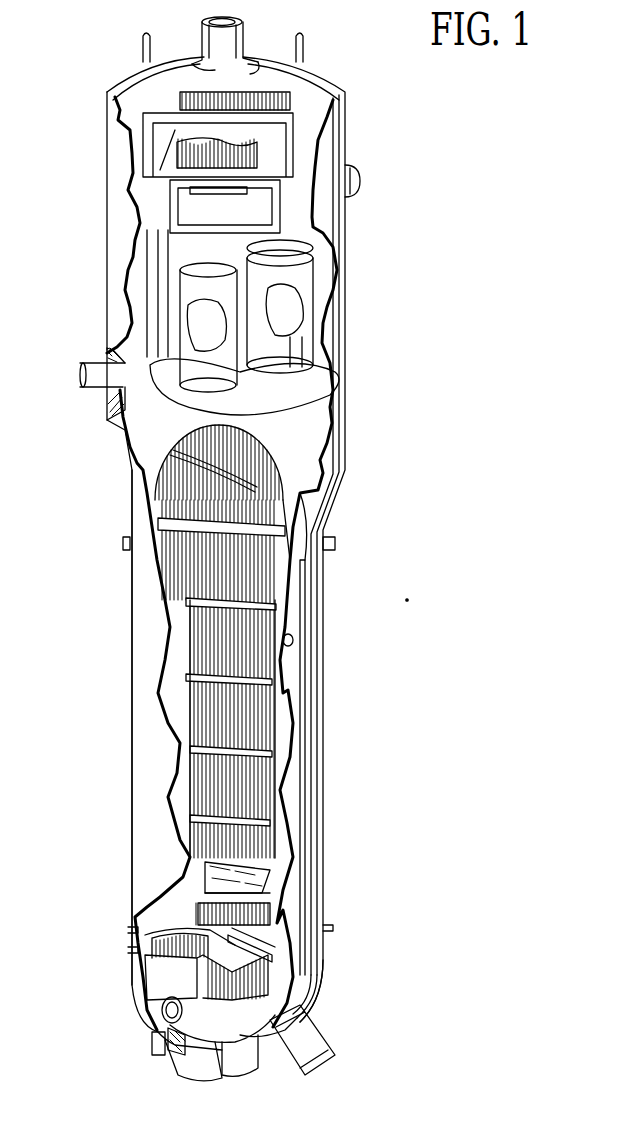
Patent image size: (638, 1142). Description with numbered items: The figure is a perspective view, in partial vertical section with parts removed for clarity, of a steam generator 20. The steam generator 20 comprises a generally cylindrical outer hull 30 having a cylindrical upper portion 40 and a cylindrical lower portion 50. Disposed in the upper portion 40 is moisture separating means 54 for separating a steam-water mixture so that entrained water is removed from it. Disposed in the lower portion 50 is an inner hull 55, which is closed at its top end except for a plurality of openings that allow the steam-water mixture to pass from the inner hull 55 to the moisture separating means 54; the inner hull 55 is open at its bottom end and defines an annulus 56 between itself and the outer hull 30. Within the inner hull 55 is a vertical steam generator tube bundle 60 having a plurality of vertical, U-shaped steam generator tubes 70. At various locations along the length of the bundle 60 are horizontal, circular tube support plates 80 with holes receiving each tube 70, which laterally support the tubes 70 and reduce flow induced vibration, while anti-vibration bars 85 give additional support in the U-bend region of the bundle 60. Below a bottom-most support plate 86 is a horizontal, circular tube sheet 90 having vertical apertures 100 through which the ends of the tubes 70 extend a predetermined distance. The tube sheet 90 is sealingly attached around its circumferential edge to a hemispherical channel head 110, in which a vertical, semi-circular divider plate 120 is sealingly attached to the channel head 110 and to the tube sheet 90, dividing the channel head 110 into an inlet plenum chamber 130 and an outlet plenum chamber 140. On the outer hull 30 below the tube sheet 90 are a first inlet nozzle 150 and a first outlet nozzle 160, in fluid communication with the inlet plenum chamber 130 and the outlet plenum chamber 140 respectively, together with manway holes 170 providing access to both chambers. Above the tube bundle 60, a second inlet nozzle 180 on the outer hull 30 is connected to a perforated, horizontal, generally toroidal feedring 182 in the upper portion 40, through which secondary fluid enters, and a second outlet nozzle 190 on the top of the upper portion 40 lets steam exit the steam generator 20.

The steam generator 20 is at (372, 356).
The outer hull 30 is at (346, 221).
The upper portion 40 is at (110, 176).
The lower portion 50 is at (140, 778).
The moisture separating means 54 is at (175, 128).
The inner hull 55 is at (281, 598).
The annulus 56 is at (296, 640).
The vertical steam generator tube bundle 60 is at (245, 793).
The steam generator tubes 70 is at (250, 693).
The tube support plates 80 is at (231, 679).
The anti-vibration bars 85 is at (282, 503).
The bottom-most support plate 86 is at (265, 890).
The tube sheet 90 is at (155, 968).
The apertures 100 is at (292, 966).
The channel head 110 is at (320, 990).
The divider plate 120 is at (232, 1022).
The inlet plenum chamber 130 is at (282, 1002).
The outlet plenum chamber 140 is at (155, 995).
The first inlet nozzle 150 is at (310, 1062).
The first outlet nozzle 160 is at (190, 1066).
The manway holes 170 is at (168, 1015).
The second inlet nozzle 180 is at (112, 398).
The feedring 182 is at (125, 440).
The second outlet nozzle 190 is at (235, 25).